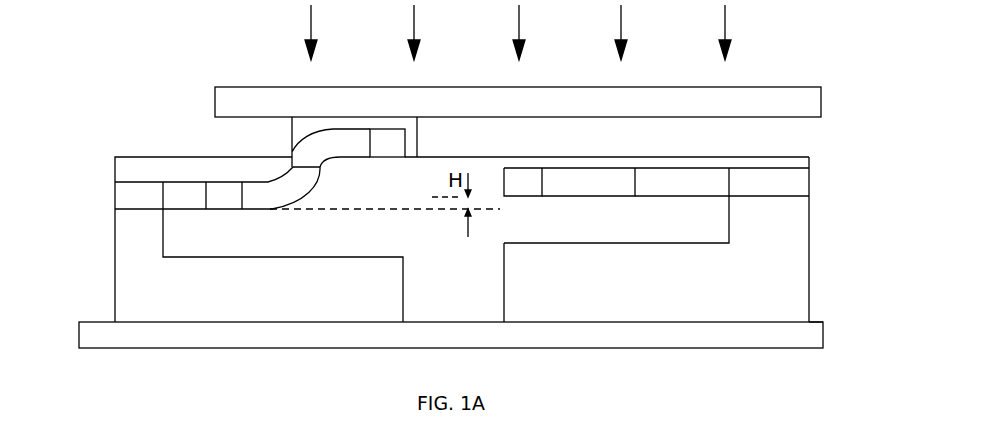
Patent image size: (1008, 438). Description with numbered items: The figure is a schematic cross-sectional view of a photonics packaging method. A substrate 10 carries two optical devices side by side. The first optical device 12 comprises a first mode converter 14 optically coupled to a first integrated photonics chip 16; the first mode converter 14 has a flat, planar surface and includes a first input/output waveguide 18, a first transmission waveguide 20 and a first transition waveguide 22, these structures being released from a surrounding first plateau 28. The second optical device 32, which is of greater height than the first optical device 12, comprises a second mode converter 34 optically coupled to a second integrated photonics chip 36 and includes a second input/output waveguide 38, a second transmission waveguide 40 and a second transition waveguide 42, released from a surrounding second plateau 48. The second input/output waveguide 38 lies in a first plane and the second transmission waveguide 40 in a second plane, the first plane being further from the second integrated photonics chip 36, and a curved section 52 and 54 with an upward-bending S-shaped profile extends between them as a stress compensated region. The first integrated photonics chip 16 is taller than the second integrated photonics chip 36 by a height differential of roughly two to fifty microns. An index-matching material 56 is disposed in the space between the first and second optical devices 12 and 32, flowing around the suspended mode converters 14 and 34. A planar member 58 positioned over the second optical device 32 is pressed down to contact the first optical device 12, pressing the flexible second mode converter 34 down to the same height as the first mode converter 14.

The substrate 10 is at (452, 333).
The first optical device 12 is at (853, 263).
The first mode converter 14 is at (593, 203).
The first integrated photonics chip 16 is at (793, 253).
The first input/output waveguide 18 is at (517, 185).
The first transmission waveguide 20 is at (598, 183).
The first transition waveguide 22 is at (668, 187).
The first plateau 28 is at (800, 183).
The second optical device 32 is at (98, 243).
The second mode converter 34 is at (355, 168).
The second integrated photonics chip 36 is at (337, 267).
The second input/output waveguide 38 is at (393, 147).
The second transmission waveguide 40 is at (223, 192).
The second transition waveguide 42 is at (178, 198).
The second plateau 48 is at (132, 197).
The second stress-compensated waveguide 52 is at (307, 152).
The curved section 54 is at (250, 200).
The index-matching material 56 is at (130, 163).
The planar member 58 is at (778, 95).